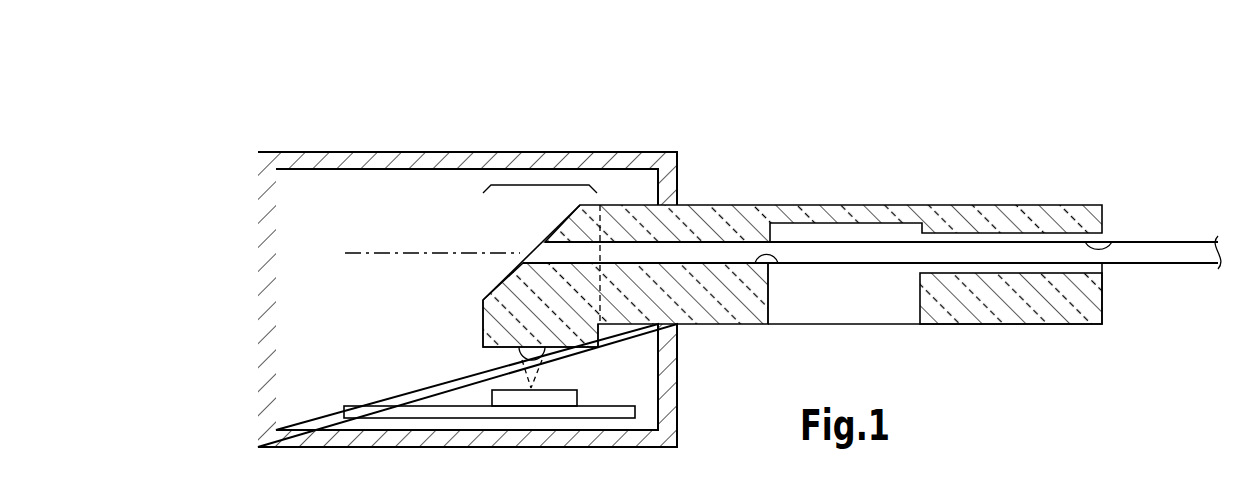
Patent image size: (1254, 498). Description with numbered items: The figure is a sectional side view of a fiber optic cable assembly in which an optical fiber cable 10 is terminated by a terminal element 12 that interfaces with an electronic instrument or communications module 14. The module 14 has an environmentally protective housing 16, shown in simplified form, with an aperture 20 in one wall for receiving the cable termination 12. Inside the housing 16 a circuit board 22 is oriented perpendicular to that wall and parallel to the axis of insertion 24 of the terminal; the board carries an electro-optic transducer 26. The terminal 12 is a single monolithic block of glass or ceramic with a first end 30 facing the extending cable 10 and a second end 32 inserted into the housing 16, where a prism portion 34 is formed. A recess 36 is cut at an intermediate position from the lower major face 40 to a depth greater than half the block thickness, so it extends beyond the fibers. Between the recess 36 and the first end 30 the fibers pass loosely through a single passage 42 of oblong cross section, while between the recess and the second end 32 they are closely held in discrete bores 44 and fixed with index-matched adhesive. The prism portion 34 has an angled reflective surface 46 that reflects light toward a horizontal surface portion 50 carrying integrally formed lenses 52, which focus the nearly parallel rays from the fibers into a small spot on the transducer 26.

The optical fiber cable 10 is at (1196, 236).
The terminal element 12 is at (823, 245).
The communications module 14 is at (437, 251).
The environmentally protective housing 16 is at (257, 291).
The aperture 20 is at (699, 205).
The circuit board 22 is at (364, 406).
The axis of insertion 24 is at (386, 253).
The transducer 26 is at (566, 388).
The first end 30 is at (1102, 290).
The second end 32 is at (483, 325).
The prism portion 34 is at (541, 185).
The recess 36 is at (920, 308).
The lower major face 40 is at (1010, 324).
The single passage 42 is at (1112, 243).
The discrete bores 44 is at (778, 263).
The angled reflective surface 46 is at (506, 279).
The horizontal surface portion 50 is at (560, 349).
The lenses 52 is at (519, 368).